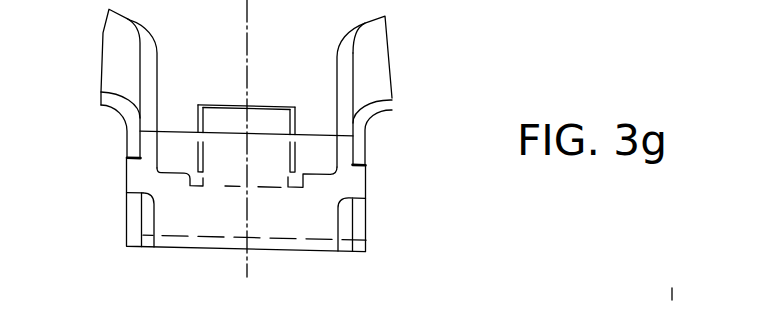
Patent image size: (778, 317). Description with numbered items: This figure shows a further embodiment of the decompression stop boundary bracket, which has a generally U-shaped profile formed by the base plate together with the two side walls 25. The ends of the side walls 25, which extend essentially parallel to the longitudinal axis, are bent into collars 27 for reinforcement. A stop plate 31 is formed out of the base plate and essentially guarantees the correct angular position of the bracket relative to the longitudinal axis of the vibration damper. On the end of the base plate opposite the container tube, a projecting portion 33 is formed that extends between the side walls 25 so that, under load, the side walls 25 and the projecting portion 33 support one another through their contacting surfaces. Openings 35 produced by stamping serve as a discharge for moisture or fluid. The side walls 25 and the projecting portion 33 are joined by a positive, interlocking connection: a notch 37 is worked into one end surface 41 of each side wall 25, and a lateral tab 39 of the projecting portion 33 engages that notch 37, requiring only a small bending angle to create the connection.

The side walls 25 is at (122, 150).
The collars 27 is at (110, 54).
The stop plate 31 is at (267, 117).
The projecting portion 33 is at (299, 218).
The openings 35 is at (148, 223).
The notch 37 is at (124, 205).
The tab 39 is at (362, 182).
The end surface 41 is at (360, 150).